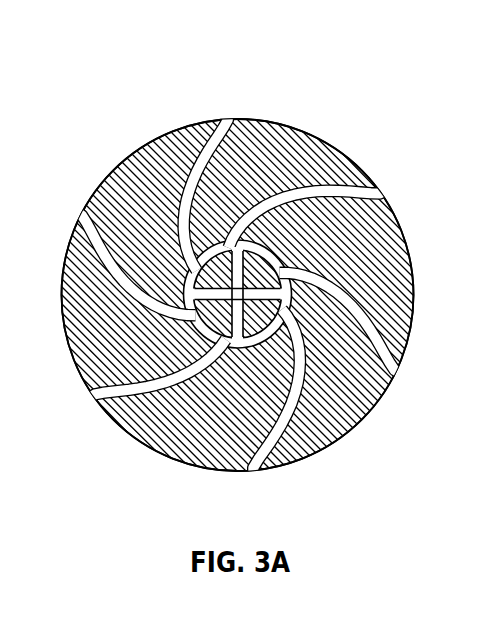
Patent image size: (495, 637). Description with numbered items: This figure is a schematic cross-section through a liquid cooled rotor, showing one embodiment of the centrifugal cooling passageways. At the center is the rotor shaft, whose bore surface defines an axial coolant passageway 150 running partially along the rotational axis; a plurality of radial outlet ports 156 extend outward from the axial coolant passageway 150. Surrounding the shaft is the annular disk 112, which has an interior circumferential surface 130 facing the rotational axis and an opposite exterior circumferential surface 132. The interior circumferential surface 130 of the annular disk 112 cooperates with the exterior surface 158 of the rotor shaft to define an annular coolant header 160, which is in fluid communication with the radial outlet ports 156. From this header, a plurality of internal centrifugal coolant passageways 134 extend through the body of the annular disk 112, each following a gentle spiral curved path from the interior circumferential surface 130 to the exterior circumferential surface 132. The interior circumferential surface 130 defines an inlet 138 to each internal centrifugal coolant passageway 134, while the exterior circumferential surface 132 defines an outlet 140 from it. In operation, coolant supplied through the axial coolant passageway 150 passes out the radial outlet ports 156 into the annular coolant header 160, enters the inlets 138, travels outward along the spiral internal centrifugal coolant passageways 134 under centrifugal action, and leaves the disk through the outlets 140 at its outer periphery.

The annular disk 112 is at (327, 63).
The interior circumferential surface 130 is at (273, 267).
The exterior circumferential surface 132 is at (300, 127).
The internal centrifugal coolant passageway 134 is at (108, 272).
The inlet 138 is at (293, 343).
The outlet 140 is at (226, 117).
The axial coolant passageway 150 is at (233, 294).
The radial outlet ports 156 is at (292, 294).
The exterior surface 158 is at (252, 337).
The annular coolant header 160 is at (138, 408).